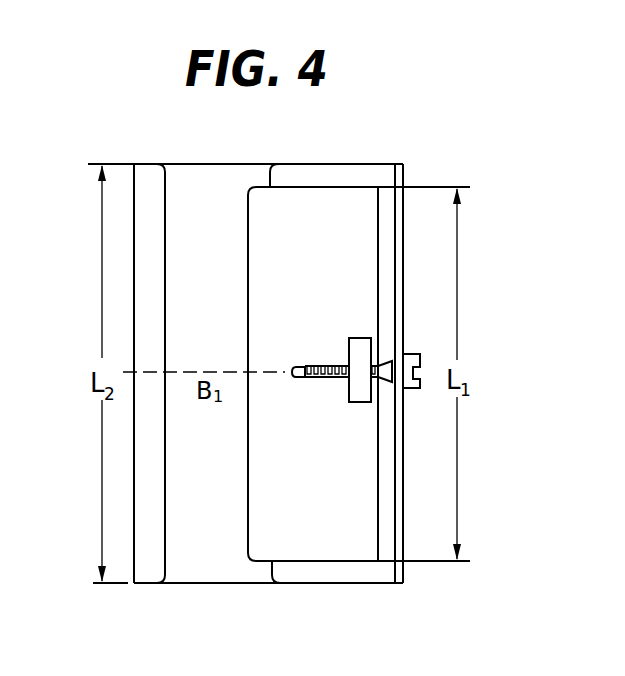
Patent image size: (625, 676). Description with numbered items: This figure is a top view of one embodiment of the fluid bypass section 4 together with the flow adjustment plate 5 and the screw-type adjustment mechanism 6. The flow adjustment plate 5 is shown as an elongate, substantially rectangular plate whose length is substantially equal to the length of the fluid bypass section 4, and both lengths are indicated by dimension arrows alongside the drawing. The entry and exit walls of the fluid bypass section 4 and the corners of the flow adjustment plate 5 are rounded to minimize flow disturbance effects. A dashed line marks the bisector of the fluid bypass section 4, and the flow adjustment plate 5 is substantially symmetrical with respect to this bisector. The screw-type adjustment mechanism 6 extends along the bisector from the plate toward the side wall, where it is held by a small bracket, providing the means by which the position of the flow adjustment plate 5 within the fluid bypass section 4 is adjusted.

The fluid bypass section 4 is at (193, 226).
The flow adjustment plate 5 is at (305, 226).
The screw-type adjustment mechanism 6 is at (418, 348).